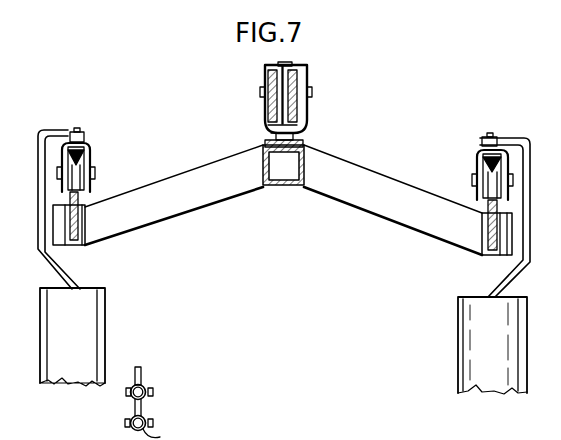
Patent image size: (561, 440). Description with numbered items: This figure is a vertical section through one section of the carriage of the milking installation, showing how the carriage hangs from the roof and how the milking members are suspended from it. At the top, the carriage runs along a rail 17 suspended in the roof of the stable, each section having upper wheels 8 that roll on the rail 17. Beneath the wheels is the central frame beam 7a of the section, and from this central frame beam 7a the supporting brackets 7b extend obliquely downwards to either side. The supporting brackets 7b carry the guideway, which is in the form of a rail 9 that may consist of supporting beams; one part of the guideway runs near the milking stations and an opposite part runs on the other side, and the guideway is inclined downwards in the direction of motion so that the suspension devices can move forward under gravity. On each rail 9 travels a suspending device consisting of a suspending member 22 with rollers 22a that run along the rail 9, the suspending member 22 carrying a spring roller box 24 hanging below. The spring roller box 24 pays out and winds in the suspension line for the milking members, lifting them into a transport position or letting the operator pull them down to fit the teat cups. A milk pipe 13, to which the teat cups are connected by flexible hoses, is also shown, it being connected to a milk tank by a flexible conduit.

The central frame beam 7a is at (267, 146).
The supporting brackets 7b is at (166, 184).
The upper wheels 8 is at (272, 83).
The rail 9 is at (79, 203).
The milk pipe 13 is at (143, 388).
The rail 17 is at (297, 133).
The suspending member 22 is at (513, 143).
The rollers 22a is at (483, 180).
The spring roller box 24 is at (475, 346).